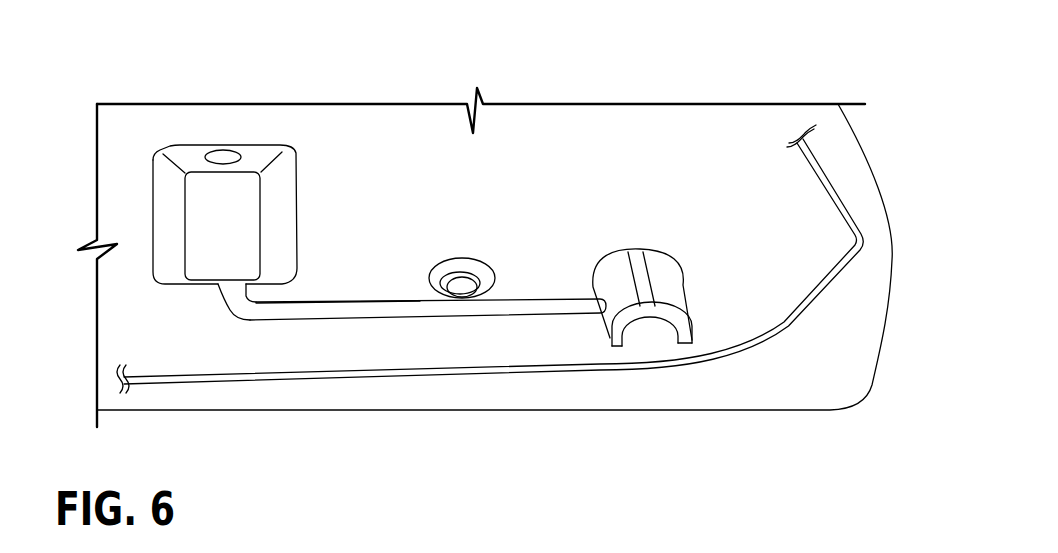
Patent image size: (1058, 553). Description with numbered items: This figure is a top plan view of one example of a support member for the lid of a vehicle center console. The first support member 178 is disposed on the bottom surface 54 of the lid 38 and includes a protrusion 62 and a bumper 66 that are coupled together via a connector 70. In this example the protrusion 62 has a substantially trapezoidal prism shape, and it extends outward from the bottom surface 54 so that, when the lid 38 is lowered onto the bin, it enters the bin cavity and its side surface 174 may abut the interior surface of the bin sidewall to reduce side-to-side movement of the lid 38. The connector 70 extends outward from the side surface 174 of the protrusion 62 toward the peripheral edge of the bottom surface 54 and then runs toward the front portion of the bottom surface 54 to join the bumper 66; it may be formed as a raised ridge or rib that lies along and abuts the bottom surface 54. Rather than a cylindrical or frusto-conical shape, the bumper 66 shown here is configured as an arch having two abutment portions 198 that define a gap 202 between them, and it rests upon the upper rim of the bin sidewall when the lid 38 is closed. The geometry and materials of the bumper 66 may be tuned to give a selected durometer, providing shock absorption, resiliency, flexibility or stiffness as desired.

The lid 38 is at (605, 153).
The bottom surface 54 is at (724, 172).
The protrusion 62 is at (157, 268).
The bumper 66 is at (255, 158).
The connector 70 is at (543, 307).
The side surface 174 is at (172, 198).
The first support member 178 is at (315, 312).
The abutment portions 198 is at (613, 338).
The gap 202 is at (645, 335).